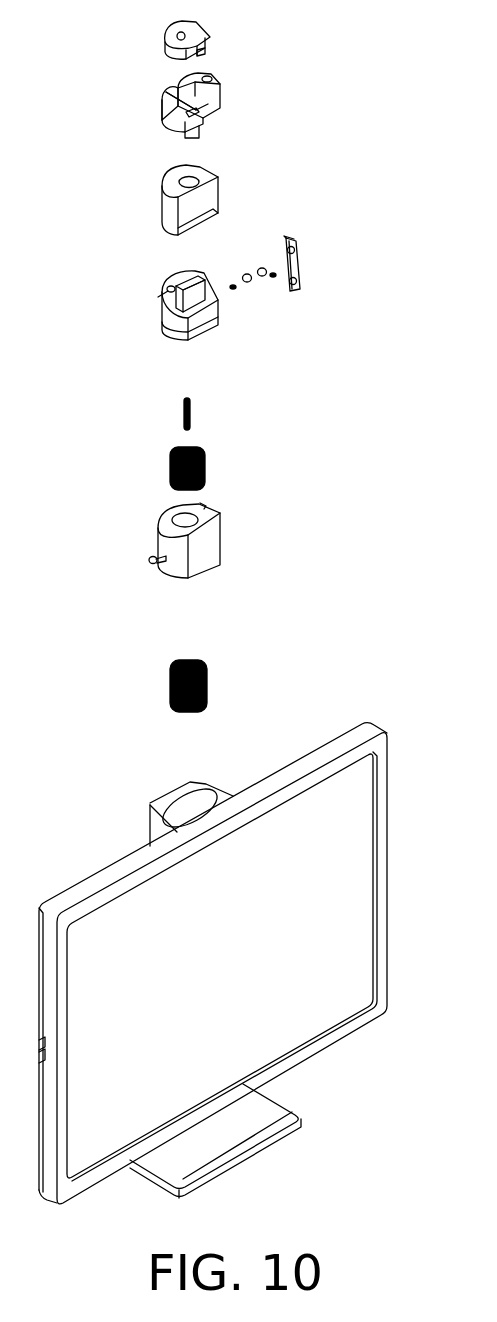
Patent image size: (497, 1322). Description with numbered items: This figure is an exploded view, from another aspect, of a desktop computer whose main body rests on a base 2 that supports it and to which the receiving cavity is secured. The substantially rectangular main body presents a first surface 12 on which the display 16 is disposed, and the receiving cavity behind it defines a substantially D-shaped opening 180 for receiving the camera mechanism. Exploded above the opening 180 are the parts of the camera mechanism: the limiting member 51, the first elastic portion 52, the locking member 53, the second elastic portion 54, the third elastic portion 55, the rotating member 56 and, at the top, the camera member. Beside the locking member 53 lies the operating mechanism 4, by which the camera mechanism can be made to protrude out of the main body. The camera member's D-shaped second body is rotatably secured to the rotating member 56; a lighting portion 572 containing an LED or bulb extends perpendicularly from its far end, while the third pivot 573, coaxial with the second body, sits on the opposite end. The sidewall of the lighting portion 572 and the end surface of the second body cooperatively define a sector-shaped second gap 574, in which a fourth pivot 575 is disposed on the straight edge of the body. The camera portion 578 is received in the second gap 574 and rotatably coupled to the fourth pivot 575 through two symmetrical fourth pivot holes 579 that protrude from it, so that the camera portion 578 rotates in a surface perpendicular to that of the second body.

The camera portion 578 is at (201, 27).
The fourth pivot holes 579 is at (204, 50).
The second gap 574 is at (157, 81).
The lighting portion 572 is at (207, 86).
The fourth pivot 575 is at (196, 114).
The third pivot 573 is at (194, 130).
The rotating member 56 is at (170, 183).
The operating mechanism 4 is at (298, 262).
The locking member 53 is at (167, 324).
The third elastic portion 55 is at (191, 412).
The second elastic portion 54 is at (206, 468).
The limiting member 51 is at (208, 544).
The first elastic portion 52 is at (208, 672).
The opening 180 is at (184, 812).
The first surface 12 is at (383, 848).
The display 16 is at (346, 924).
The base 2 is at (258, 1130).